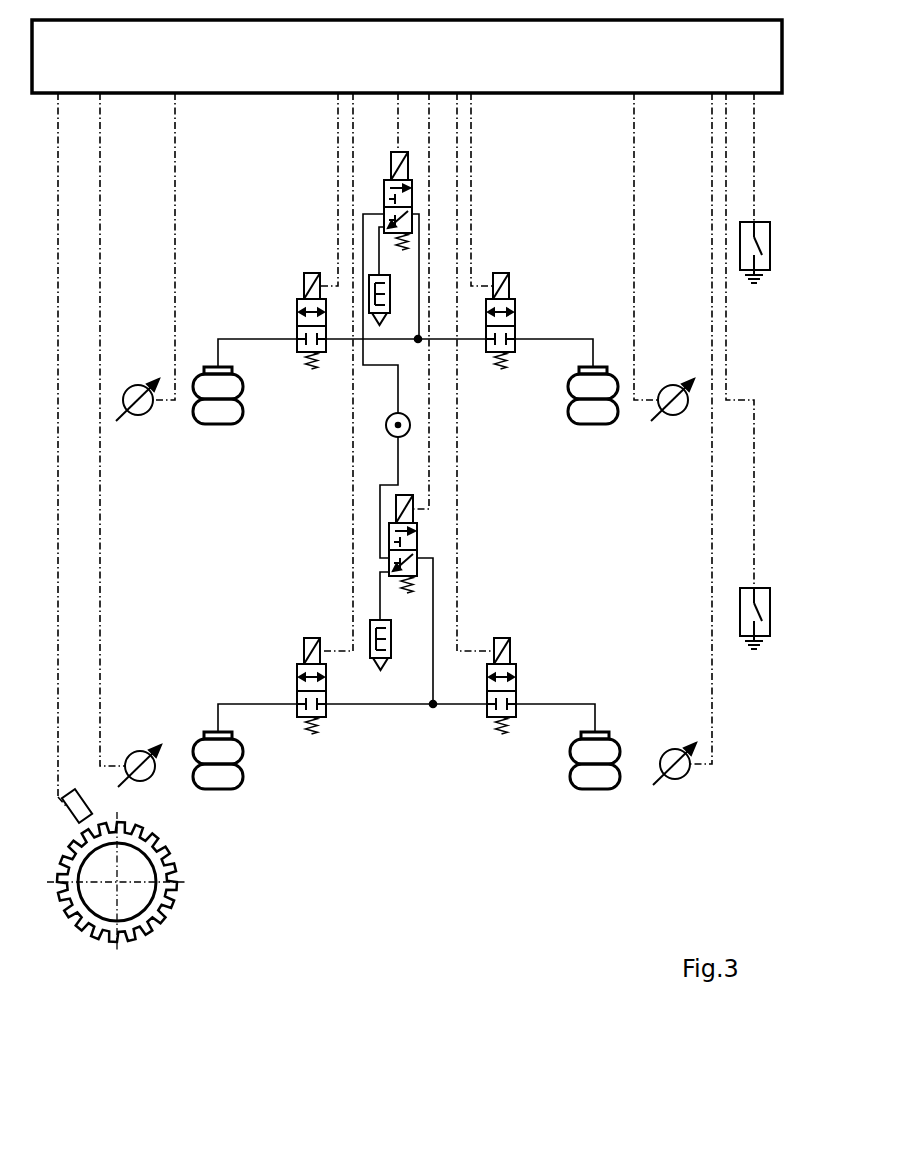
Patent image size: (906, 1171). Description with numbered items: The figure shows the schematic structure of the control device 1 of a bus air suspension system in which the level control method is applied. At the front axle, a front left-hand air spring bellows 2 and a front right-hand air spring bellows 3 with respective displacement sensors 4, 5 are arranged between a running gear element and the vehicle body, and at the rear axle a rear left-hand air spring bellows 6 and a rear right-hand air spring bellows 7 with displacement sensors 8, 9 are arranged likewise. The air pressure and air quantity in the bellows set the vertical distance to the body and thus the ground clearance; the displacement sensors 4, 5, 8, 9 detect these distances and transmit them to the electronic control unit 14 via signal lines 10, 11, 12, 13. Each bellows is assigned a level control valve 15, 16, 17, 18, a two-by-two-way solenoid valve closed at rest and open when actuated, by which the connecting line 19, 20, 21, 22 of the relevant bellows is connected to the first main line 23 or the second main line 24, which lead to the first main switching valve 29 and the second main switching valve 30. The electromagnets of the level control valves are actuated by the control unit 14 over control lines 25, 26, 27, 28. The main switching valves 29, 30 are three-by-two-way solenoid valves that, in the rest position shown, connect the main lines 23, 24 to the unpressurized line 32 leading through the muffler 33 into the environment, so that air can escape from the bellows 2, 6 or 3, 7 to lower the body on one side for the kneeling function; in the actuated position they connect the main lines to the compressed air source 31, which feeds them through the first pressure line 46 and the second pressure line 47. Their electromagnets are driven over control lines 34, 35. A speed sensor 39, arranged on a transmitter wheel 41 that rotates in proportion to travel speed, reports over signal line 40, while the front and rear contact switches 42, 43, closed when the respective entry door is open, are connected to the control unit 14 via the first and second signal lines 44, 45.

The control device 1 is at (406, 806).
The front left-hand air spring bellows 2 is at (218, 412).
The front right-hand air spring bellows 3 is at (598, 412).
The displacement sensor 4 is at (138, 386).
The displacement sensor 5 is at (673, 386).
The rear left-hand air spring bellows 6 is at (220, 778).
The rear right-hand air spring bellows 7 is at (597, 778).
The displacement sensor 8 is at (138, 752).
The displacement sensor 9 is at (673, 750).
The signal line 10 is at (175, 133).
The signal line 11 is at (634, 127).
The signal line 12 is at (100, 586).
The signal line 13 is at (712, 572).
The electronic control unit 14 is at (418, 70).
The level control valve 15 is at (293, 320).
The level control valve 16 is at (520, 320).
The level control valve 17 is at (293, 686).
The level control valve 18 is at (520, 686).
The connecting line 19 is at (220, 353).
The connecting line 20 is at (592, 354).
The connecting line 21 is at (260, 705).
The connecting line 22 is at (560, 705).
The first main line 23 is at (433, 722).
The second main line 24 is at (419, 318).
The control line 25 is at (338, 133).
The control line 26 is at (471, 128).
The control line 27 is at (353, 600).
The control line 28 is at (457, 600).
The first main switching valve 29 is at (377, 203).
The second main switching valve 30 is at (431, 543).
The compressed air source 31 is at (386, 427).
The unpressurized line 32 is at (379, 251).
The muffler 33 is at (390, 293).
The control line 34 is at (398, 143).
The control line 35 is at (429, 462).
The speed sensor 39 is at (85, 806).
The signal line 40 is at (58, 158).
The transmitter wheel 41 is at (158, 905).
The front contact switch 42 is at (740, 246).
The rear contact switch 43 is at (740, 612).
The first signal line 44 is at (754, 155).
The second signal line 45 is at (754, 525).
The first pressure line 46 is at (398, 403).
The second pressure line 47 is at (398, 462).